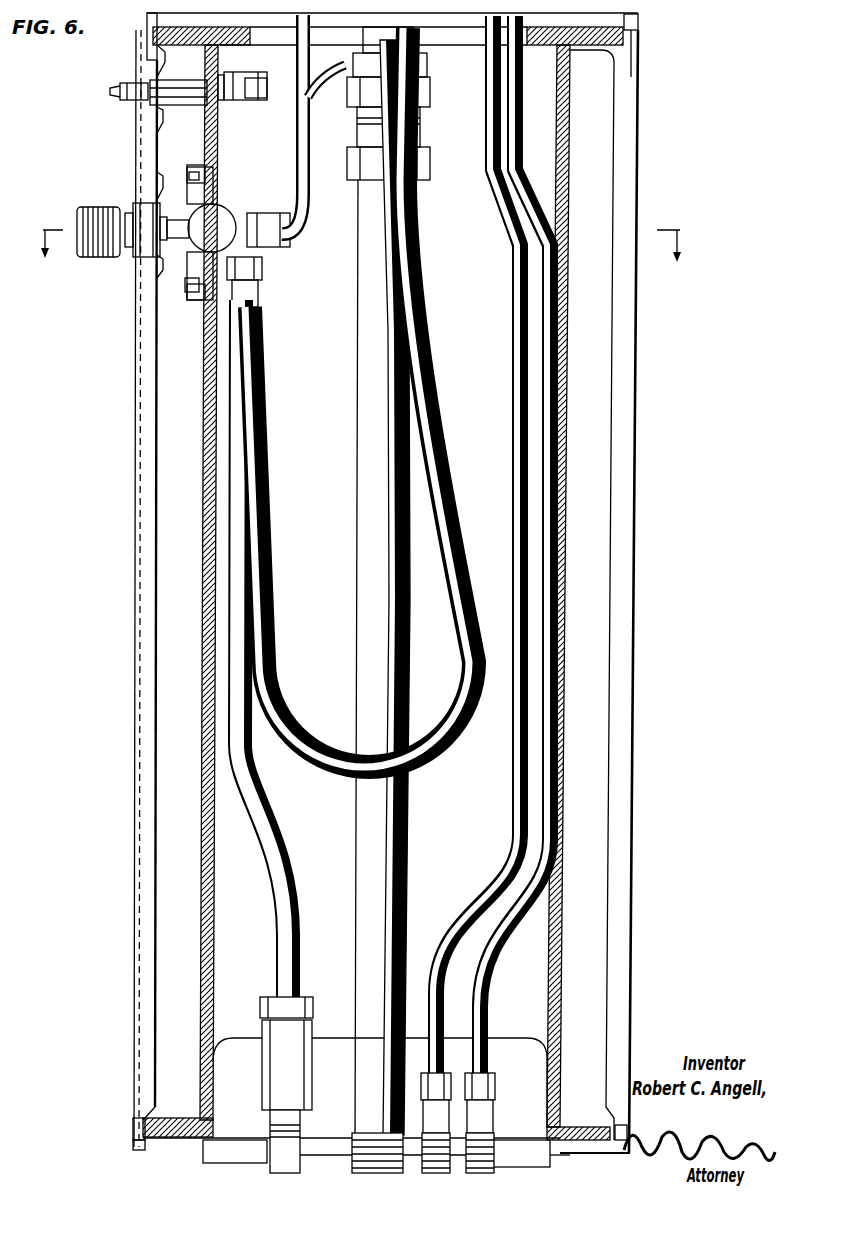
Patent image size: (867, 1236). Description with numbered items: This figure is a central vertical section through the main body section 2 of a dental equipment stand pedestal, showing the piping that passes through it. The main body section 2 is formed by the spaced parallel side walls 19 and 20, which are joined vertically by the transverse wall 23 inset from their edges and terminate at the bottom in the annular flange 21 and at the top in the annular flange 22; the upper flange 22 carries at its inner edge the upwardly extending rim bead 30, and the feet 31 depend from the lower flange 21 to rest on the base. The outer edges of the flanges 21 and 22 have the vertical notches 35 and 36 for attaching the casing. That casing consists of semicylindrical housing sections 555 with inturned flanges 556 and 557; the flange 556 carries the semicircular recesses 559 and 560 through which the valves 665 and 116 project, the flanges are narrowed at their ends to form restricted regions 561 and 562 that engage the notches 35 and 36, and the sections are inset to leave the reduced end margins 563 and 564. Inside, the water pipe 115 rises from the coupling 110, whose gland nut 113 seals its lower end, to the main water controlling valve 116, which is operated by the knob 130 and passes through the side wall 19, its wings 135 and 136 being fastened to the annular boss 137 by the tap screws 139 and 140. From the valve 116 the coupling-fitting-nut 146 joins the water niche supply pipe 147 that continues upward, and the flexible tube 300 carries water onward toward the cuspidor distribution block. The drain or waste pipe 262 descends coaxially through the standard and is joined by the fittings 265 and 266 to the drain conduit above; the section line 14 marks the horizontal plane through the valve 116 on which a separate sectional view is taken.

The main body section 2 is at (204, 765).
The section line 14— 14 is at (349, 232).
The side wall 19 is at (206, 536).
The side wall 20 is at (564, 585).
The lower annular flange 21 is at (145, 1119).
The upper annular flange 22 is at (601, 53).
The transverse wall 23 is at (325, 657).
The rim bead 30 is at (535, 48).
The feet 31 is at (203, 1157).
The slot or notch 35 is at (139, 1129).
The slot or notch 36 is at (148, 42).
The coupling 110 is at (262, 1086).
The gland nut 113 is at (262, 1006).
The water pipe 115 is at (280, 947).
The main water controlling valve 116 is at (198, 227).
The controlling handle or knob 130 is at (92, 256).
The wing 135 is at (199, 172).
The wing 136 is at (204, 292).
The annular boss 137 is at (262, 293).
The tap screw 139 is at (192, 177).
The tap screw 140 is at (188, 287).
The coupling-fitting-nut 146 is at (272, 250).
The water niche supply pipe 147 is at (298, 164).
The drain or waste pipe 262 is at (357, 557).
The fitting 265 is at (425, 99).
The fitting 266 is at (425, 172).
The flexible tube 300 is at (425, 758).
The housing section 555 is at (636, 449).
The inturned flange 556 is at (141, 675).
The inturned flange 557 is at (609, 707).
The semicircular recess 559 is at (142, 107).
The semicircular recess 560 is at (138, 207).
The restricted region 561 is at (627, 1132).
The restricted region 562 is at (633, 22).
The reduced semicircular end margin 563 is at (136, 1146).
The reduced semicircular end margin 564 is at (636, 20).
The valve 665 is at (175, 103).